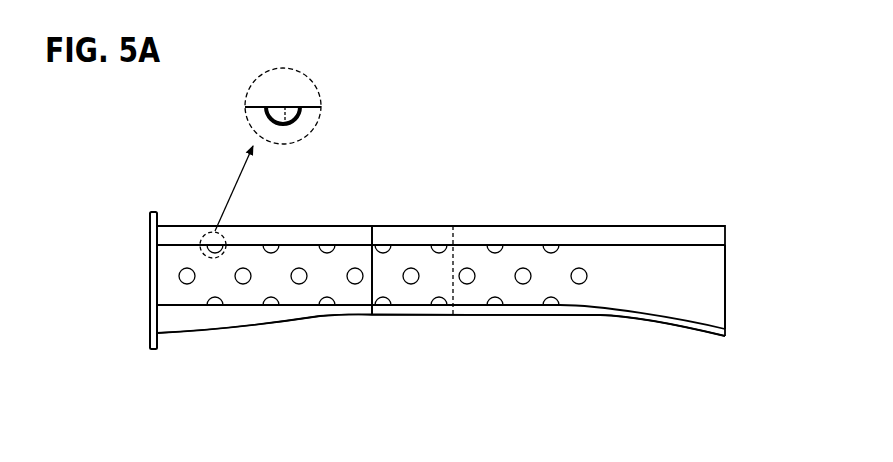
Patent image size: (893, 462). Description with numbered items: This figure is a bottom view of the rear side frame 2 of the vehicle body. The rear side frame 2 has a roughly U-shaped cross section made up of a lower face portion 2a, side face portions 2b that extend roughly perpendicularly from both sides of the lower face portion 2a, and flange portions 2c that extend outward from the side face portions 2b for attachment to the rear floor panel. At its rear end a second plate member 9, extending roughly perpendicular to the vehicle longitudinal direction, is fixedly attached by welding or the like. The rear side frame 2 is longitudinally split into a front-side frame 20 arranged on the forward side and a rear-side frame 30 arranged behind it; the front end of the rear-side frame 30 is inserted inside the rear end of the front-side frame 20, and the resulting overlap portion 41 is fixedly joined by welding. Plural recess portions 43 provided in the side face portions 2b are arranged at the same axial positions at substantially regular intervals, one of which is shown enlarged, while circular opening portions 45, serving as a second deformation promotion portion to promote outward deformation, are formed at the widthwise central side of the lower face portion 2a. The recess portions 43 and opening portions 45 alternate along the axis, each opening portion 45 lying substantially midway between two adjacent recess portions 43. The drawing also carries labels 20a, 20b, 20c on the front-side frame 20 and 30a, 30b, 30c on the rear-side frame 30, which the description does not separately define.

The rear side frame 2 is at (622, 220).
The lower face portion 2a is at (712, 277).
The side face portion 2b is at (715, 244).
The flange portion 2c is at (692, 237).
The second plate member 9 is at (153, 211).
The front-side frame 20 is at (543, 225).
The hole 20a is at (522, 290).
The notch 20b is at (575, 306).
The lower edge portion 20c is at (483, 316).
The rear-side frame 30 is at (305, 224).
The hole 30a is at (292, 288).
The notch 30b is at (347, 306).
The lower edge portion 30c is at (248, 322).
The overlap portion 41 is at (403, 258).
The recess portion 43 is at (286, 107).
The opening portion 45 is at (188, 286).